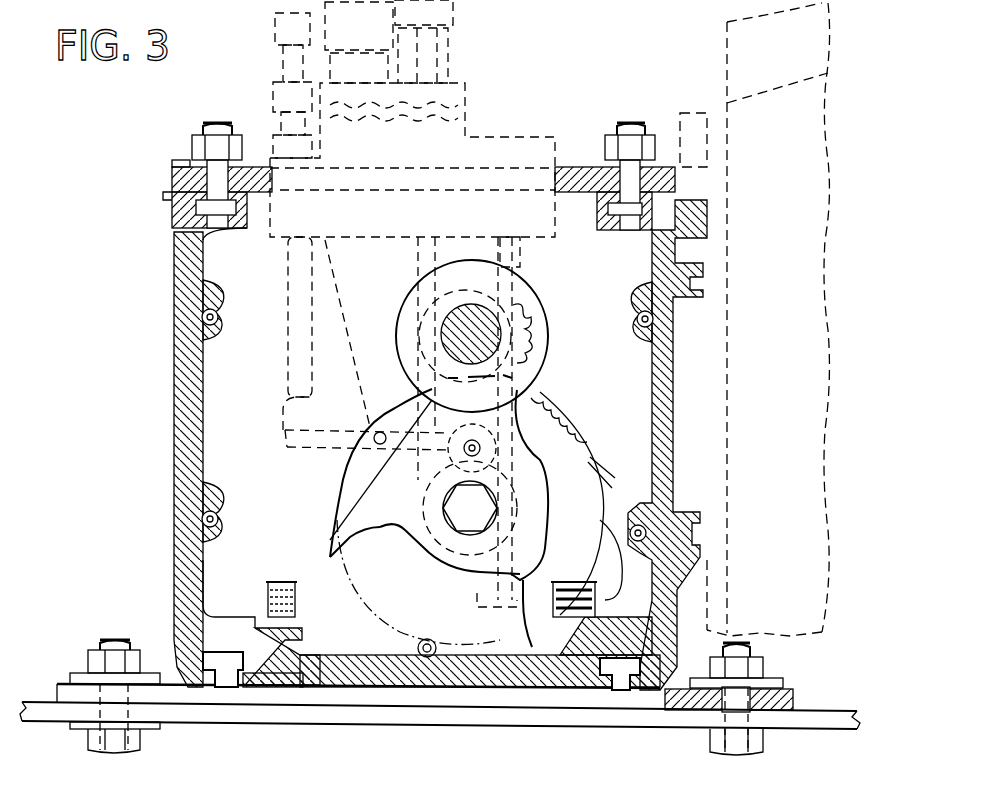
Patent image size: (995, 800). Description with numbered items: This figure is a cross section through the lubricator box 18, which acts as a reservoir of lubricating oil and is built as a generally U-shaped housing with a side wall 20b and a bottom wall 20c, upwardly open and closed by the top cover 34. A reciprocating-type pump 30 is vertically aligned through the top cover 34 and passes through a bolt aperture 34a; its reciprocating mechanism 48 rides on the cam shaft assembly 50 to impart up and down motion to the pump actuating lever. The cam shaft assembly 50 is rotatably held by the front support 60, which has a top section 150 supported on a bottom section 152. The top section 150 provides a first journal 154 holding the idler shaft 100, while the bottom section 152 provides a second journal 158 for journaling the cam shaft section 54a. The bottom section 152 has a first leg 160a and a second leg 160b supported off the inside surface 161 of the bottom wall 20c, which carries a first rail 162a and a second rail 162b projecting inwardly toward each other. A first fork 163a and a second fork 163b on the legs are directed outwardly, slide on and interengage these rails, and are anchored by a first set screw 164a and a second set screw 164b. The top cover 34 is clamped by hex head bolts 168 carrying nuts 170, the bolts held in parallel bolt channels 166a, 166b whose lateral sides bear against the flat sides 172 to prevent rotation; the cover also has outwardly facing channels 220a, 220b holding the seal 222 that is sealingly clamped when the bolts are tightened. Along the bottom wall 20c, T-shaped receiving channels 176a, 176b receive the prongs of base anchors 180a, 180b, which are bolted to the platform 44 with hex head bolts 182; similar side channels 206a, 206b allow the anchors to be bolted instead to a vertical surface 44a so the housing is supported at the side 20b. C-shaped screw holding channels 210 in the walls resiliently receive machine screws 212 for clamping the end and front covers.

The lubricator box 18 is at (172, 246).
The side wall 20b is at (665, 385).
The bottom wall 20c is at (300, 690).
The pump 30 is at (470, 100).
The top cover 34 is at (190, 167).
The bolt aperture 34a is at (615, 180).
The platform 44 is at (40, 700).
The vertical surface 44a is at (727, 350).
The reciprocating mechanism 48 is at (285, 447).
The cam shaft assembly 50 is at (288, 336).
The cam shaft section 54a is at (480, 508).
The front support 60 is at (540, 300).
The idler shaft 100 is at (514, 378).
The top section 150 is at (546, 347).
The bottom section 152 is at (582, 443).
The first journal 154 is at (485, 320).
The second journal 158 is at (482, 518).
The first leg 160a is at (345, 540).
The second leg 160b is at (592, 660).
The inside surface 161 is at (355, 688).
The first rail 162a is at (260, 615).
The second rail 162b is at (590, 655).
The first fork 163a is at (318, 630).
The second fork 163b is at (505, 655).
The first set screw 164a is at (275, 580).
The second set screw 164b is at (578, 605).
The bolt channel 166a is at (220, 228).
The bolt channel 166b is at (650, 227).
The hex head bolt 168 is at (213, 123).
The nut 170 is at (242, 145).
The flat side 172 is at (196, 208).
The receiving channel 176a is at (210, 652).
The receiving channel 176b is at (660, 650).
The base anchor 180a is at (660, 740).
The base anchor 180b is at (182, 696).
The hex head bolt 182 is at (92, 744).
The side channel 206a is at (700, 512).
The side channel 206b is at (703, 297).
The screw holding channel 210 is at (203, 284).
The machine screw 212 is at (205, 317).
The outwardly facing channel 220a is at (172, 194).
The outwardly facing channel 220b is at (647, 217).
The seal 222 is at (172, 165).